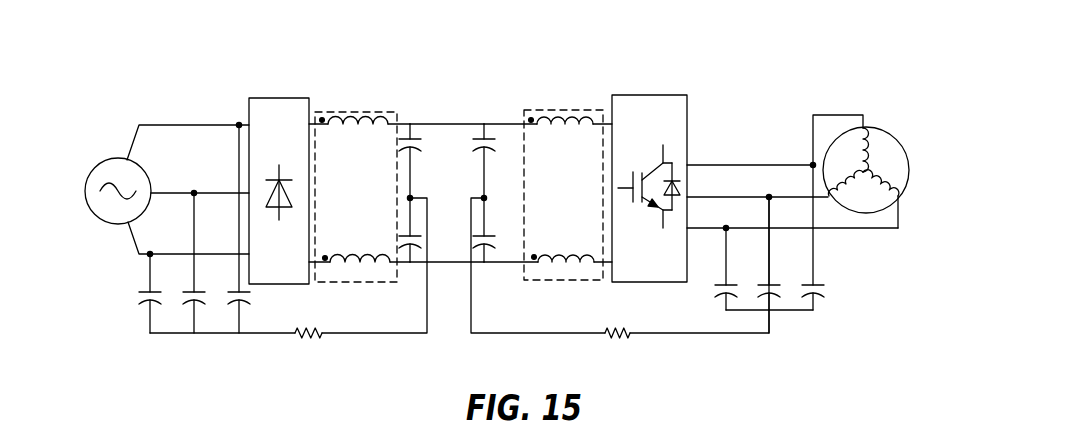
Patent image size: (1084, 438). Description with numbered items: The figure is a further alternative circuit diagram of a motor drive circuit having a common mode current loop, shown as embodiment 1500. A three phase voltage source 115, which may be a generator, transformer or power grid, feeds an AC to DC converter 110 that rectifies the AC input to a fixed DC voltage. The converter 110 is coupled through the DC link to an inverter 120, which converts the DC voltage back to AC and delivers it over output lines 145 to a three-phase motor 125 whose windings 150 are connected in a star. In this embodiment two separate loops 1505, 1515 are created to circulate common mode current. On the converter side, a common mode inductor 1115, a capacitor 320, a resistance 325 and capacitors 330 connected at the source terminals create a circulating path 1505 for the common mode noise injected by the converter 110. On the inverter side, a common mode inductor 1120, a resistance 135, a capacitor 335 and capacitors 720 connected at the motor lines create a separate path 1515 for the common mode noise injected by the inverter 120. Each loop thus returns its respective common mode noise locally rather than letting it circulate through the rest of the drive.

The three phase voltage source 115 is at (113, 158).
The AC to DC converter 110 is at (279, 98).
The common mode inductor Lc2 1115 is at (359, 198).
The capacitor Cc2 320 is at (441, 178).
The capacitor Cc1 335 is at (505, 178).
The common mode inductor Lc1 1120 is at (568, 196).
The inverter 120 is at (648, 95).
The output lines 145 is at (689, 165).
The motor 125 is at (823, 147).
The motor windings 150 is at (865, 128).
The embodiment 1500 is at (820, 58).
The capacitor Cc3 330 is at (191, 249).
The resistance Rc2 325 is at (322, 336).
The circulating path 1505 is at (395, 326).
The resistance Rc1 135 is at (631, 335).
The path 1515 is at (664, 331).
The capacitor Cc4 720 is at (790, 263).